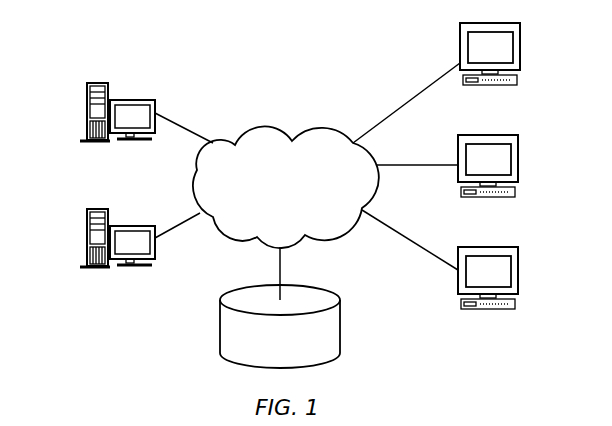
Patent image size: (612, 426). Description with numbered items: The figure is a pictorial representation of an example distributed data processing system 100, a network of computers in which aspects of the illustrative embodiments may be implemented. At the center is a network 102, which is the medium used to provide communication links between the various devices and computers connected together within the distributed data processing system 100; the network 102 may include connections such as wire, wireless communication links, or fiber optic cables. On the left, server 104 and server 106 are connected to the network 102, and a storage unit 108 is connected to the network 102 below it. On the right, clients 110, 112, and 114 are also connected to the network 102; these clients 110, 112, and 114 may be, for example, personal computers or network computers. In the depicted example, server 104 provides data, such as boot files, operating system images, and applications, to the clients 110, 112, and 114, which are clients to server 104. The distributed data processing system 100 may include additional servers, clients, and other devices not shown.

The distributed data processing system 100 is at (345, 60).
The network 102 is at (268, 127).
The server 104 is at (85, 115).
The server 106 is at (85, 242).
The storage unit 108 is at (220, 325).
The client 110 is at (520, 55).
The client 112 is at (518, 165).
The client 114 is at (518, 278).